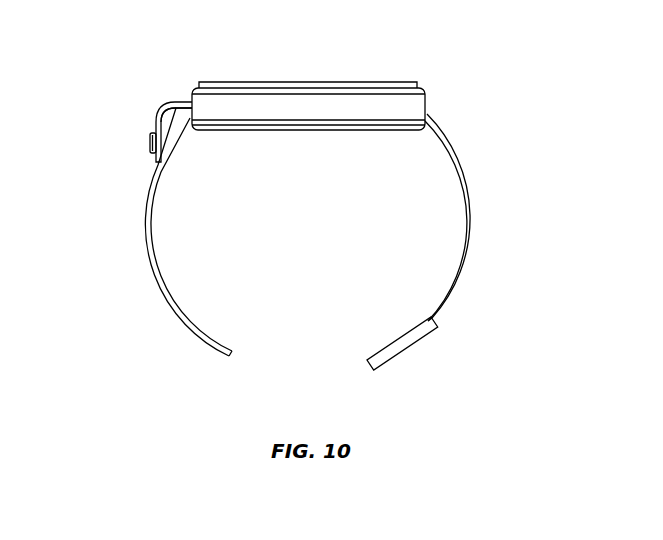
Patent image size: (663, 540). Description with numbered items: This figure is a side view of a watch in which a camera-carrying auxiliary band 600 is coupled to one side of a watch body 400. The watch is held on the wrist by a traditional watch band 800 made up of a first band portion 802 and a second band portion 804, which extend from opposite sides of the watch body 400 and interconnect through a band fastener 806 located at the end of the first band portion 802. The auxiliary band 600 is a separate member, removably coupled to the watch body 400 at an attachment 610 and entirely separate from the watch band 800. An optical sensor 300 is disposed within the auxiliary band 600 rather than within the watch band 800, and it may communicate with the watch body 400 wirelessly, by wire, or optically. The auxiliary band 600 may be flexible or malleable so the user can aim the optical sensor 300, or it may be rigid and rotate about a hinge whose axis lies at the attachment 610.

The optical sensor 300 is at (151, 141).
The watch body 400 is at (393, 105).
The auxiliary band 600 is at (165, 103).
The attachment 610 is at (181, 101).
The watch band 800 is at (310, 232).
The first band portion 802 is at (472, 213).
The second band portion 804 is at (148, 240).
The band fastener 806 is at (409, 346).